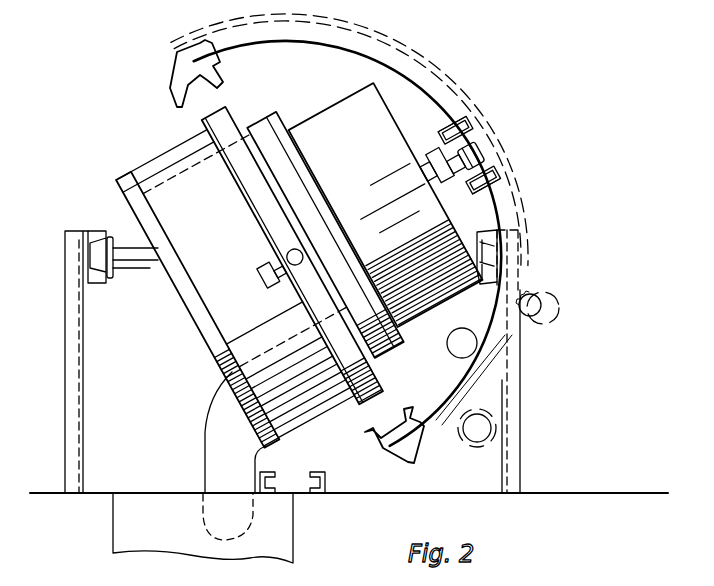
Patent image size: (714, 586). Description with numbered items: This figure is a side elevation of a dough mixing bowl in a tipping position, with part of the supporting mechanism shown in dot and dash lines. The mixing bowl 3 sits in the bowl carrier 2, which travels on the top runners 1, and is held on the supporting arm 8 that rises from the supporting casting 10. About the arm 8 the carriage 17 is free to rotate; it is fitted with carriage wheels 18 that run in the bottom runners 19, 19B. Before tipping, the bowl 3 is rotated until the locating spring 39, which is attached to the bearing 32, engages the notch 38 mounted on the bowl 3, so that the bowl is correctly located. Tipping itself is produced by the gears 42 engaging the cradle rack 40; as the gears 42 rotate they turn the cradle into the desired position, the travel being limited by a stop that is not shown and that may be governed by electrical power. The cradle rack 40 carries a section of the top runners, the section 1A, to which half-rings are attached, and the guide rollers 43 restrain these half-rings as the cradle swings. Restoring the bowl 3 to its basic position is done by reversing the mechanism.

The top runners 1 is at (95, 233).
The top runner section 1A is at (170, 98).
The bowl carrier 2 is at (142, 256).
The mixing bowl 3 is at (226, 320).
The supporting arm 8 is at (440, 152).
The supporting casting 10 is at (331, 112).
The carriage 17 is at (474, 143).
The carriage wheels 18 is at (460, 130).
The bottom runners 19 is at (325, 472).
The bottom runners 19B is at (464, 112).
The bearing 32 is at (205, 121).
The notch 38 is at (263, 282).
The locating spring 39 is at (282, 275).
The cradle rack 40 is at (397, 60).
The gears 42 is at (543, 307).
The guide rollers 43 is at (458, 344).